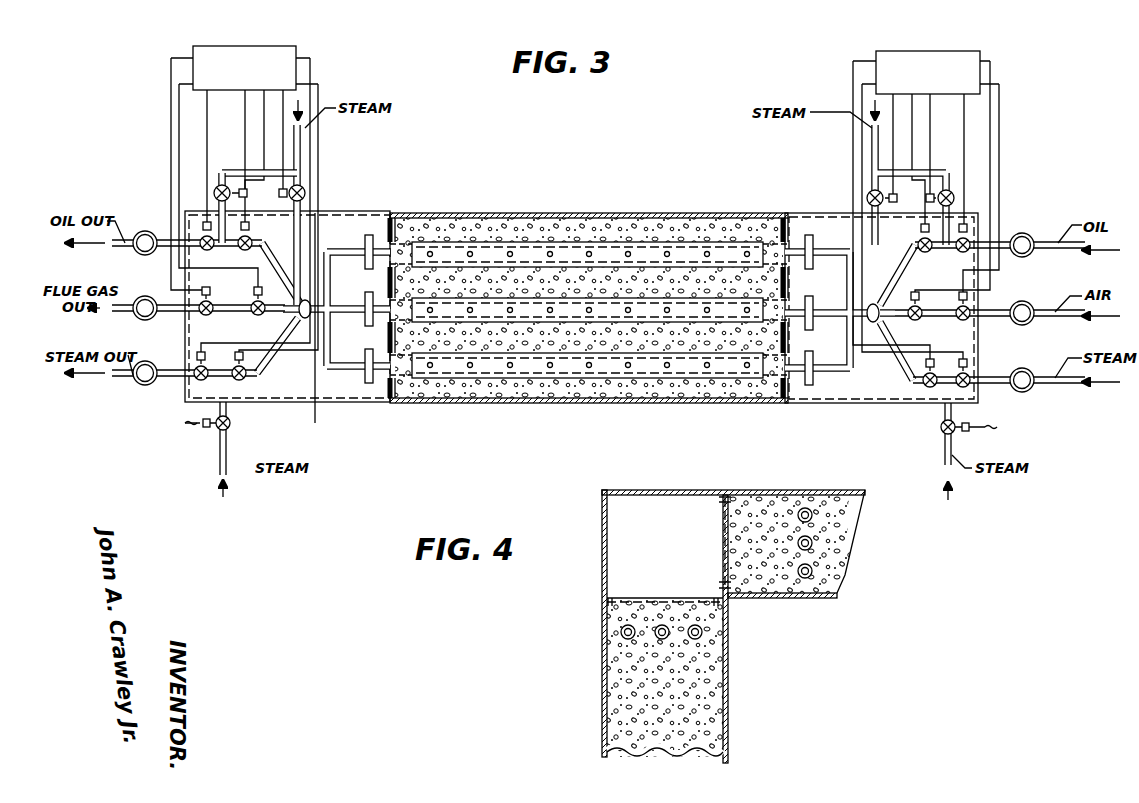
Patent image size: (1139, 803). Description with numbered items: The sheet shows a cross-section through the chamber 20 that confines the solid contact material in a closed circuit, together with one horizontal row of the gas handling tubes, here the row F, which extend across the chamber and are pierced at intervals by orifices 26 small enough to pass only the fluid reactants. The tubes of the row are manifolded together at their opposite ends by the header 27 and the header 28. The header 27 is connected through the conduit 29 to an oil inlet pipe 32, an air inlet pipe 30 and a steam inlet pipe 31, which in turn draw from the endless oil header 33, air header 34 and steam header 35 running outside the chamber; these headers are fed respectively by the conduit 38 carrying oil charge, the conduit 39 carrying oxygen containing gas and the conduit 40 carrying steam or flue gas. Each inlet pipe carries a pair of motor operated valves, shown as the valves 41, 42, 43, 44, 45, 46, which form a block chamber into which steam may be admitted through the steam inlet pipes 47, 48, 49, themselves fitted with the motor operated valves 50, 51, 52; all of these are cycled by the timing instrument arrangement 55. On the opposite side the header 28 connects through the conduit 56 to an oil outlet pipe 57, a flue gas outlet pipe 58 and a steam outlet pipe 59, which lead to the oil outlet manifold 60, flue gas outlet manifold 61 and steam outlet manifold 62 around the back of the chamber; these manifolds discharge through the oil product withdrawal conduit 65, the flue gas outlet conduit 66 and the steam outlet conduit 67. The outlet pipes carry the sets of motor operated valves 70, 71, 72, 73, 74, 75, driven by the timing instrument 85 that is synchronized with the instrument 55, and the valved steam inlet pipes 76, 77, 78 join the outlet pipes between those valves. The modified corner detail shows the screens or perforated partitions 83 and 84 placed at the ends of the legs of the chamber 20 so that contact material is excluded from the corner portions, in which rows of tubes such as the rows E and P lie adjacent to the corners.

In FIG. 3, the chamber 20 is at (718, 213).
In FIG. 4, the chamber 20 is at (765, 490).
In FIG. 3, the orifices 26 is at (551, 256).
In FIG. 3, the row of gas handling tubes F is at (667, 298).
In FIG. 3, the header 27 is at (828, 375).
In FIG. 3, the header 28 is at (342, 372).
In FIG. 3, the conduit 29 is at (852, 395).
In FIG. 3, the air inlet pipe 30 is at (990, 318).
In FIG. 3, the steam inlet pipe 31 is at (1005, 360).
In FIG. 3, the oil inlet pipe 32 is at (1007, 233).
In FIG. 3, the oil header 33 is at (1040, 215).
In FIG. 3, the air header 34 is at (1022, 327).
In FIG. 3, the steam header 35 is at (1022, 392).
In FIG. 3, the conduit 38 is at (1040, 258).
In FIG. 3, the conduit 39 is at (1068, 320).
In FIG. 3, the conduit 40 is at (1030, 386).
In FIG. 3, the motor operated valve 41 is at (963, 254).
In FIG. 3, the motor operated valve 42 is at (922, 236).
In FIG. 3, the motor operated valve 43 is at (897, 322).
In FIG. 3, the motor operated valve 44 is at (958, 322).
In FIG. 3, the motor operated valve 45 is at (925, 386).
In FIG. 3, the motor operated valve 46 is at (975, 392).
In FIG. 3, the steam inlet pipe 47 is at (955, 212).
In FIG. 3, the steam inlet pipe 48 is at (875, 232).
In FIG. 3, the steam inlet pipe 49 is at (942, 413).
In FIG. 3, the motor operated valve 50 is at (945, 440).
In FIG. 3, the motor operated valve 51 is at (868, 192).
In FIG. 3, the motor operated valve 52 is at (950, 190).
In FIG. 3, the timing instrument arrangement 55 is at (968, 50).
In FIG. 3, the conduit 56 is at (317, 423).
In FIG. 3, the oil outlet pipe 57 is at (272, 268).
In FIG. 3, the flue gas outlet pipe 58 is at (170, 318).
In FIG. 3, the steam outlet pipe 59 is at (167, 380).
In FIG. 3, the oil outlet manifold 60 is at (152, 232).
In FIG. 3, the flue gas outlet manifold 61 is at (160, 278).
In FIG. 3, the steam outlet manifold 62 is at (137, 383).
In FIG. 3, the oil product withdrawal conduit 65 is at (118, 246).
In FIG. 3, the flue gas outlet conduit 66 is at (120, 312).
In FIG. 3, the steam outlet conduit 67 is at (118, 376).
In FIG. 3, the motor operated valve 70 is at (218, 258).
In FIG. 3, the motor operated valve 71 is at (238, 250).
In FIG. 3, the motor operated valve 72 is at (198, 315).
In FIG. 3, the motor operated valve 73 is at (250, 315).
In FIG. 3, the motor operated valve 74 is at (207, 385).
In FIG. 3, the motor operated valve 75 is at (245, 383).
In FIG. 3, the steam inlet pipe 76 is at (200, 210).
In FIG. 3, the steam inlet pipe 77 is at (302, 232).
In FIG. 3, the steam inlet pipe 78 is at (222, 440).
In FIG. 3, the timing instrument 85 is at (268, 44).
In FIG. 4, the screen or perforated partition 83 is at (722, 522).
In FIG. 4, the screen or perforated partition 84 is at (705, 594).
In FIG. 4, the row of gas handling tubes E is at (808, 580).
In FIG. 4, the row of gas handling tubes P is at (613, 633).